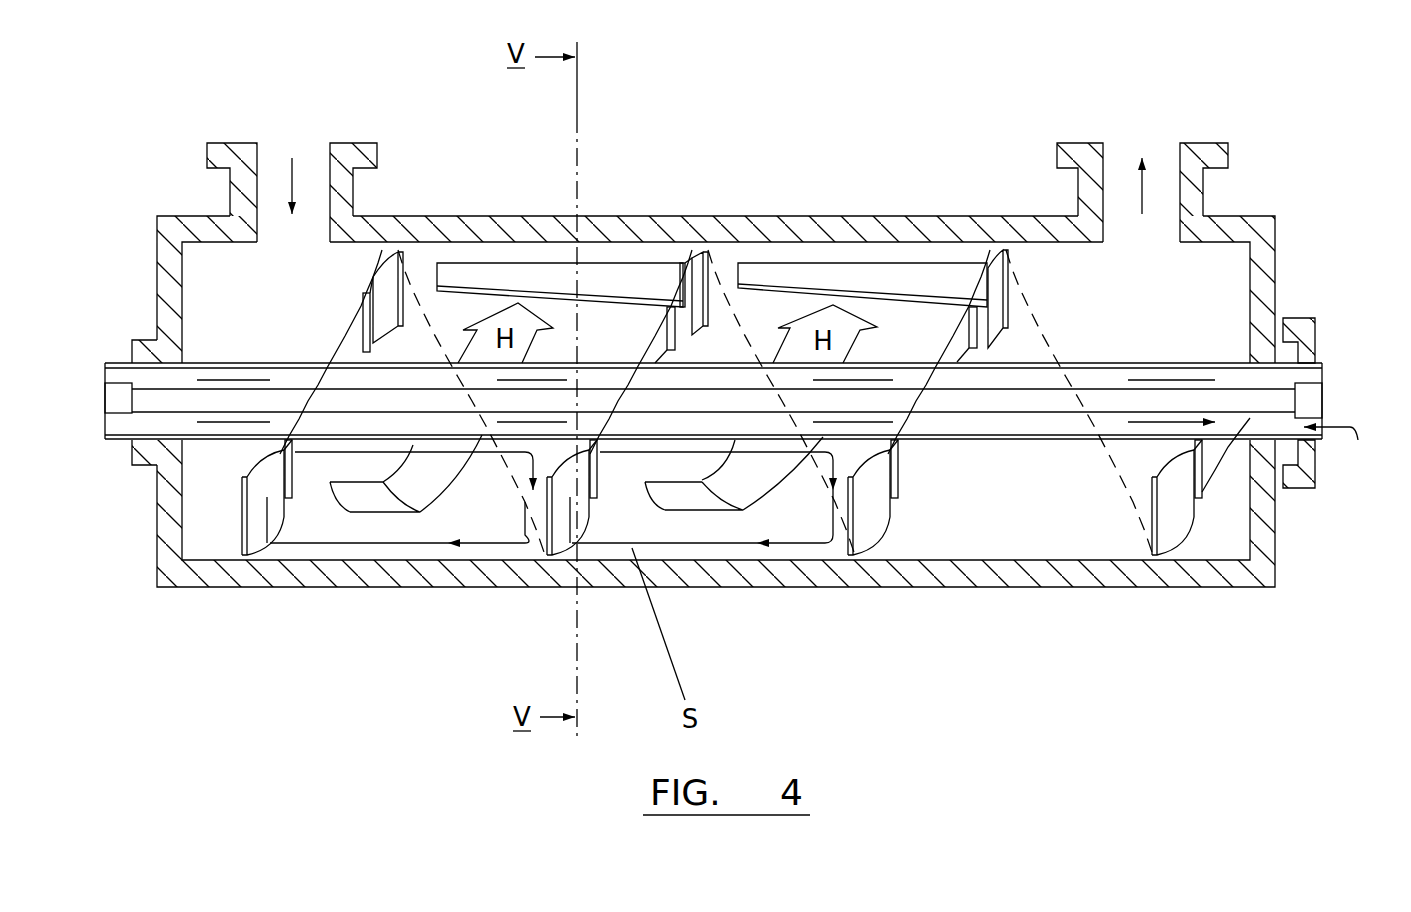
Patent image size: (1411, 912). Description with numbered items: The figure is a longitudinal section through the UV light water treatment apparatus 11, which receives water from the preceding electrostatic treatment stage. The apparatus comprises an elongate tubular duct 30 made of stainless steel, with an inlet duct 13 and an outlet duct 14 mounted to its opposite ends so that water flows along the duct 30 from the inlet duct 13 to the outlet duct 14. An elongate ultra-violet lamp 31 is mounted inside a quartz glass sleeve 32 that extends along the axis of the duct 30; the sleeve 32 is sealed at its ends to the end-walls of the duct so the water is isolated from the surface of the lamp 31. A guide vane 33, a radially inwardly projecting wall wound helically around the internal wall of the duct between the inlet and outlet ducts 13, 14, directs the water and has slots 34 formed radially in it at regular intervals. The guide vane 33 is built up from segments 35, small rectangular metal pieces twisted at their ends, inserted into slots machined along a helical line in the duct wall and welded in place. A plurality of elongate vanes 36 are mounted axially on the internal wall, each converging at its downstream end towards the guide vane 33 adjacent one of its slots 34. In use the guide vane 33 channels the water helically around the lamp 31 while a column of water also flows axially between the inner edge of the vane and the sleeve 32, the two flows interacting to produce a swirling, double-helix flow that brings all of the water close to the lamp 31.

The UV light water treatment apparatus 11 is at (794, 590).
The inlet duct 13 is at (363, 150).
The outlet duct 14 is at (1218, 148).
The elongate tubular duct 30 is at (790, 228).
The ultra-violet lamp 31 is at (1112, 700).
The quartz glass sleeve 32 is at (750, 286).
The guide vane 33 is at (636, 544).
The slots 34 is at (893, 500).
The segments 35 is at (390, 272).
The elongate vanes 36 is at (630, 275).